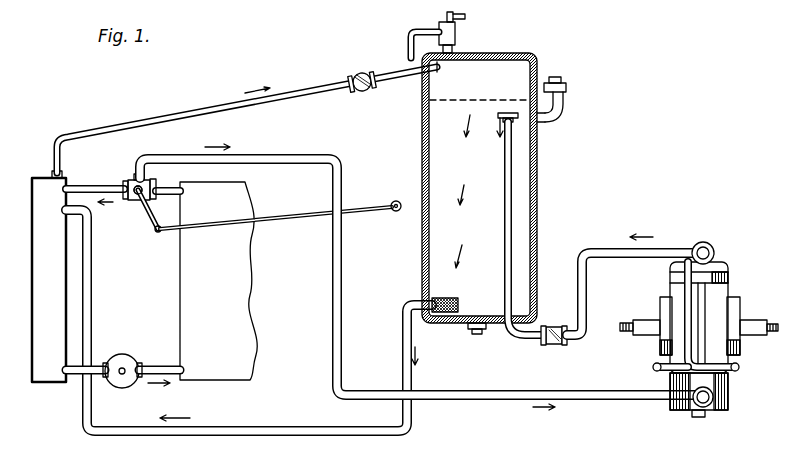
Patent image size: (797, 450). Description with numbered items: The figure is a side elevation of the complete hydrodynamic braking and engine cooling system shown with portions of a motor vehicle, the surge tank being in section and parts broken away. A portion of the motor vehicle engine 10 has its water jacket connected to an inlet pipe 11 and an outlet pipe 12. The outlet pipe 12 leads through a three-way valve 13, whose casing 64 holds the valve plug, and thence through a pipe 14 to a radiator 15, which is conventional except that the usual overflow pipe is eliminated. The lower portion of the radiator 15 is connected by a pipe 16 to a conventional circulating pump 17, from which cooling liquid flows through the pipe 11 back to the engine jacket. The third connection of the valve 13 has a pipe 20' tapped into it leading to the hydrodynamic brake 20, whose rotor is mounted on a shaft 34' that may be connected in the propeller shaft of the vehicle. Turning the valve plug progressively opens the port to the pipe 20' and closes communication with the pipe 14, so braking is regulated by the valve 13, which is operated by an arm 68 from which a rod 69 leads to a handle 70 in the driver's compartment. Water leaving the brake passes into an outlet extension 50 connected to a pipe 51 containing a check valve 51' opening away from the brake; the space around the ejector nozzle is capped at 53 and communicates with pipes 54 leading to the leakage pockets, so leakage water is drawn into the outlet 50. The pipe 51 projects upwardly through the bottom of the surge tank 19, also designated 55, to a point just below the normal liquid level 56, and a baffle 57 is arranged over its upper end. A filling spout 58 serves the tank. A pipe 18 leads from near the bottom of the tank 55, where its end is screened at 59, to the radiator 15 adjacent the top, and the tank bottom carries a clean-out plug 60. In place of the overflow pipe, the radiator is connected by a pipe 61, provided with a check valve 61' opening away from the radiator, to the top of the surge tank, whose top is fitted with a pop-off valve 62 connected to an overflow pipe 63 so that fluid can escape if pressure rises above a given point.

The motor vehicle engine 10 is at (262, 272).
The inlet pipe 11 is at (157, 364).
The outlet pipe 12 is at (166, 196).
The three-way valve 13 is at (128, 180).
The pipe 14 is at (83, 187).
The radiator 15 is at (40, 376).
The pipe 16 is at (78, 388).
The circulating pump 17 is at (120, 353).
The pipe 18 is at (210, 426).
The surge tank 19 is at (497, 188).
The hydrodynamic brake 20 is at (704, 318).
The pipe 20' is at (420, 267).
The shaft 34' is at (704, 319).
The outlet extension 50 is at (712, 245).
The pipe 51 is at (634, 279).
The check valve 51' is at (557, 320).
The cap 53 is at (728, 279).
The pipes 54 is at (658, 367).
The surge tank 55 is at (540, 203).
The normal liquid level 56 is at (473, 100).
The baffle 57 is at (508, 110).
The filling spout 58 is at (566, 106).
The screen 59 is at (455, 296).
The clean-out plug 60 is at (478, 335).
The pipe 61 is at (247, 117).
The check valve 61' is at (356, 68).
The pop-off valve 62 is at (456, 35).
The overflow pipe 63 is at (408, 43).
The casing 64 is at (143, 213).
The arm 68 is at (122, 218).
The rod 69 is at (238, 229).
The handle 70 is at (397, 201).